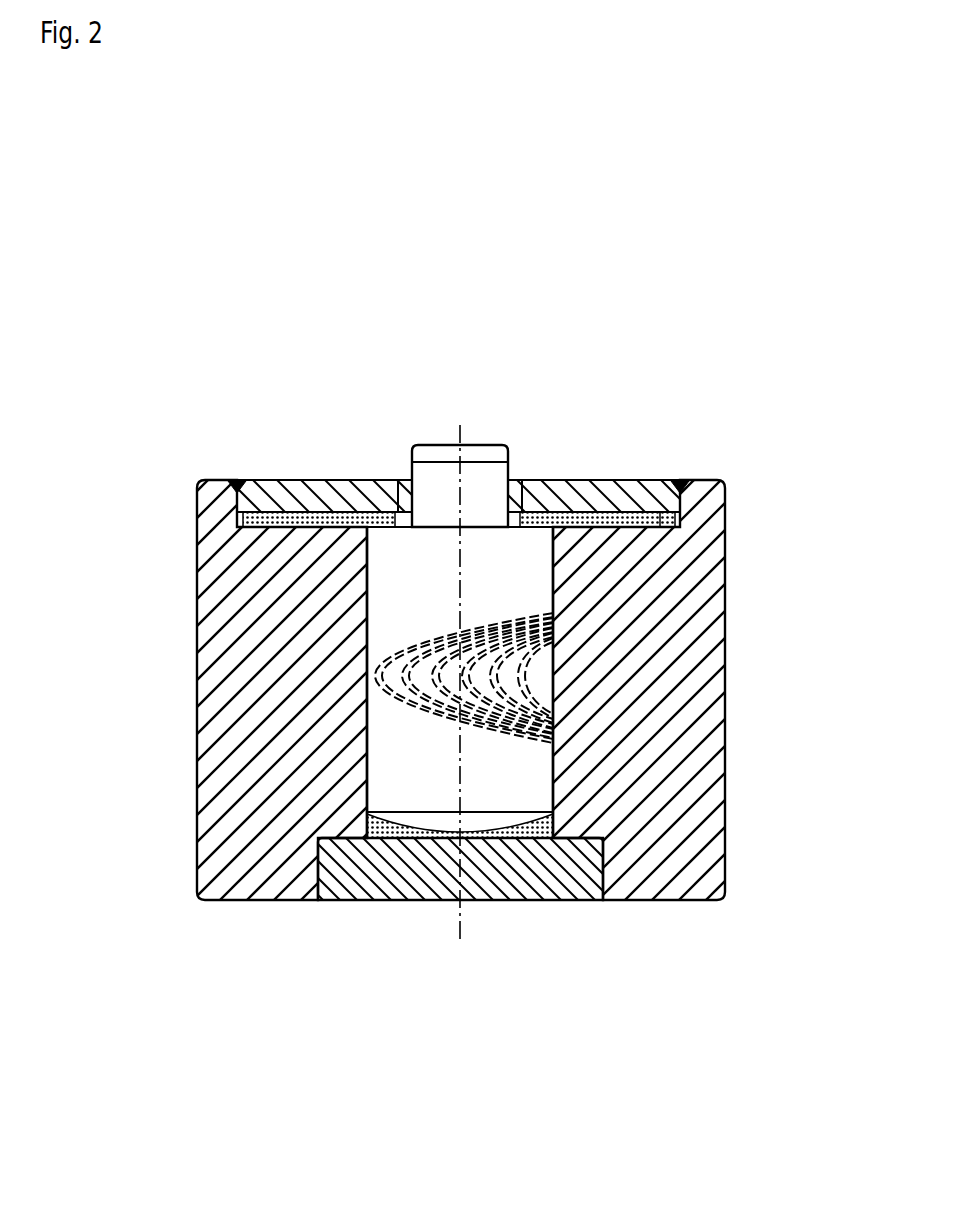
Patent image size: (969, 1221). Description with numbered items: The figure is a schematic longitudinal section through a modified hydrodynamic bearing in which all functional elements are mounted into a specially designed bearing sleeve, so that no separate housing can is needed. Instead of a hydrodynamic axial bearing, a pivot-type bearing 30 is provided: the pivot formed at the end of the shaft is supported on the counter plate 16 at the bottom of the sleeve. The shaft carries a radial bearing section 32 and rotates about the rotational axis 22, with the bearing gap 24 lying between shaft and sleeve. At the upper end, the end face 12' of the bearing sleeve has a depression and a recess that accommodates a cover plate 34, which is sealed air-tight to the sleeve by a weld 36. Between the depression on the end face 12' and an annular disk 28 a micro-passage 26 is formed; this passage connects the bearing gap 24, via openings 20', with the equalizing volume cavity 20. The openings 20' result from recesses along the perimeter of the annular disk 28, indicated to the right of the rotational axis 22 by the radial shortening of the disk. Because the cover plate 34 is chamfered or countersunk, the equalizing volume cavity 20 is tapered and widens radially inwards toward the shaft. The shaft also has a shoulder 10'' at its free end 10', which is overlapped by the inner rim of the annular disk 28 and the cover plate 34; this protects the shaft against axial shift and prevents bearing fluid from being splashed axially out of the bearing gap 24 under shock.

The free end of the shaft 10' is at (375, 401).
The shoulder 10'' is at (403, 690).
The end face of the bearing sleeve 12' is at (264, 525).
The counter plate 16 is at (520, 880).
The equalizing volume cavity 20 is at (545, 401).
The opening 20' is at (756, 534).
The rotational axis 22 is at (460, 432).
The bearing gap 24 is at (558, 765).
The micro-passage 26 is at (553, 512).
The annular disk 28 is at (628, 482).
The pivot-type bearing 30 is at (390, 835).
The radial bearing section 32 is at (545, 728).
The cover plate 34 is at (575, 483).
The weld 36 is at (237, 480).